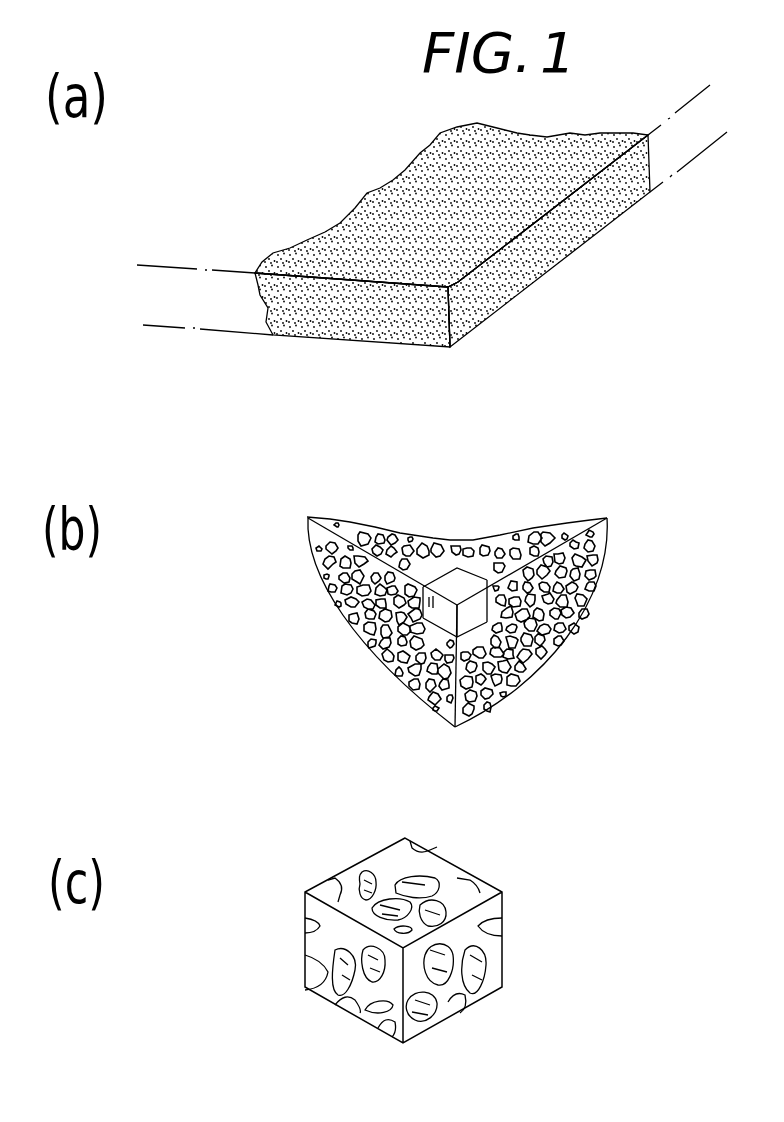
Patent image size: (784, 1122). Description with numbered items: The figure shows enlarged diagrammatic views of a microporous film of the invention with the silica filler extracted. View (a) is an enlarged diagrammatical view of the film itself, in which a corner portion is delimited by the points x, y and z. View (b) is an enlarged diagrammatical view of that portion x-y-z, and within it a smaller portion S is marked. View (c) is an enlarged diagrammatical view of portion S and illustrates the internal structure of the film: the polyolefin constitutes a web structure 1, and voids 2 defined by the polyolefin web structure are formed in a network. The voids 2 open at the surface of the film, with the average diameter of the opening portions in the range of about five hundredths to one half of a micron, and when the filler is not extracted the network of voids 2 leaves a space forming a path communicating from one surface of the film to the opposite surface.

The web structure 1 is at (443, 863).
The voids 2 is at (393, 908).
The portion S is at (441, 626).
The portion x-y-z x is at (242, 480).
The portion x-y-z y is at (690, 468).
The portion x-y- z is at (455, 767).